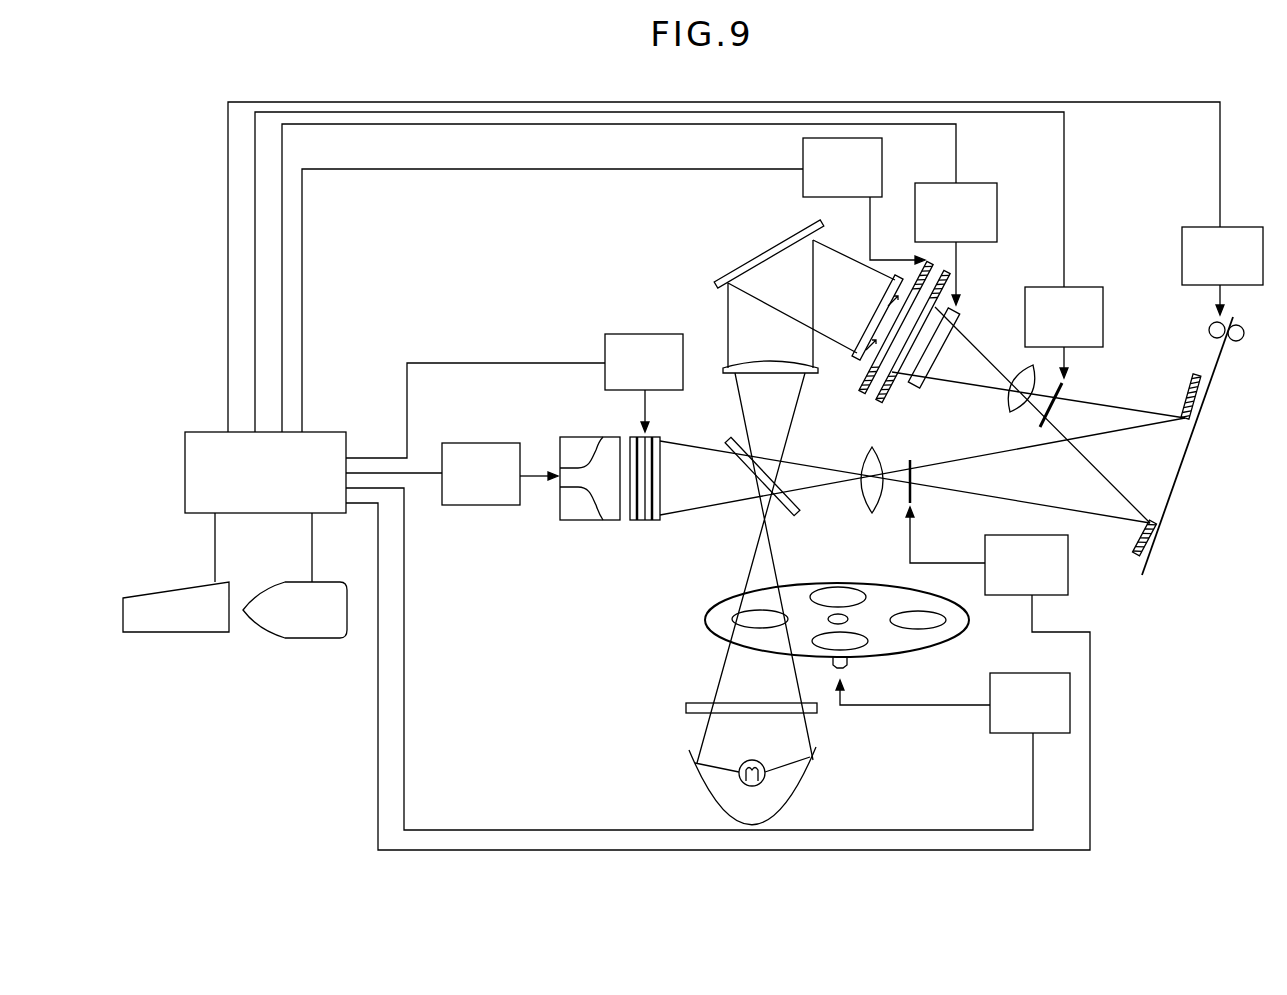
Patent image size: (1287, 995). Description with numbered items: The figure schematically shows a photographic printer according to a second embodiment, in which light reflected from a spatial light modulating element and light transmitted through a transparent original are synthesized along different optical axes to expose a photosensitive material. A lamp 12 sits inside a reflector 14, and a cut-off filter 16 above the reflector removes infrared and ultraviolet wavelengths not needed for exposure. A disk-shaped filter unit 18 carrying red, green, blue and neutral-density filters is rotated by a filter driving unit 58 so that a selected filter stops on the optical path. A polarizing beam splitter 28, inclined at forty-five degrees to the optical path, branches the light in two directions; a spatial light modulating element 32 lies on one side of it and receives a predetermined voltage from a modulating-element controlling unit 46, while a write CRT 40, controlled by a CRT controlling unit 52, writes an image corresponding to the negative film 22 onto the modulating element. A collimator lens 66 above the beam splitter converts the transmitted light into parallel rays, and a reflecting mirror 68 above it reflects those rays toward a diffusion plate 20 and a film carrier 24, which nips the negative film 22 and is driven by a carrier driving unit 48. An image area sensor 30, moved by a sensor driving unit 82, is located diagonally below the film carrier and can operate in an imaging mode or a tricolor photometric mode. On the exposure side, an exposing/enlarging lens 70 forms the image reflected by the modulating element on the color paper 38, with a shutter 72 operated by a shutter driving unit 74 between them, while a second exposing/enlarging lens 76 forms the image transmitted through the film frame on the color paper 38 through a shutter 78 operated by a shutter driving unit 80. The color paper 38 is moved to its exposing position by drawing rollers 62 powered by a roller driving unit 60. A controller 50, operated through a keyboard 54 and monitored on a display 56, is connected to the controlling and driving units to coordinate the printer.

The lamp 12 is at (767, 776).
The reflector 14 is at (711, 800).
The cut-off filter 16 is at (686, 708).
The filter unit 18 is at (705, 620).
The diffusion plate 20 is at (884, 300).
The negative film 22 is at (928, 262).
The film carrier 24 is at (864, 390).
The polarizing beam splitter 28 is at (790, 515).
The image area sensor 30 is at (926, 388).
The spatial light modulating element 32 is at (645, 520).
The color paper 38 is at (1216, 377).
The write CRT 40 is at (601, 520).
The modulating-element controlling unit 46 is at (646, 334).
The carrier driving unit 48 is at (803, 166).
The controller 50 is at (185, 472).
The CRT controlling unit 52 is at (480, 505).
The keyboard 54 is at (172, 632).
The display 56 is at (303, 638).
The filter driving unit 58 is at (996, 733).
The roller driving unit 60 is at (1192, 227).
The drawing rollers 62 is at (1243, 330).
The collimator lens 66 is at (725, 373).
The reflecting mirror 68 is at (715, 281).
The exposing/enlarging lens 70 is at (867, 508).
The shutter 72 is at (910, 462).
The shutter driving unit 74 is at (1068, 573).
The exposing/enlarging lens 76 is at (1015, 400).
The shutter 78 is at (1062, 392).
The shutter driving unit 80 is at (1096, 287).
The sensor driving unit 82 is at (997, 212).